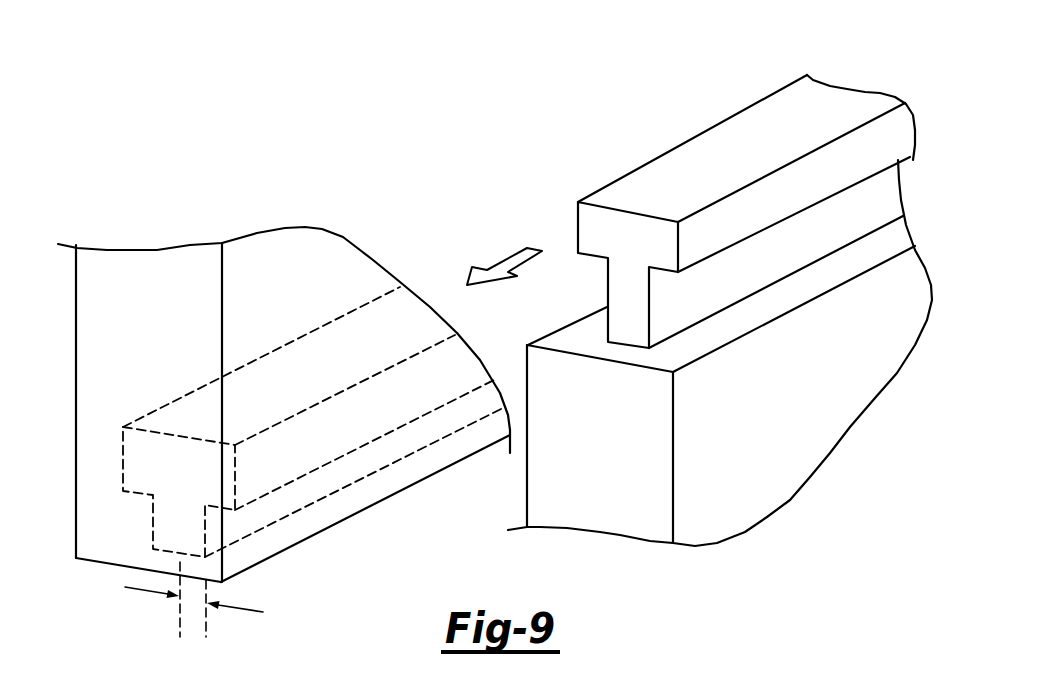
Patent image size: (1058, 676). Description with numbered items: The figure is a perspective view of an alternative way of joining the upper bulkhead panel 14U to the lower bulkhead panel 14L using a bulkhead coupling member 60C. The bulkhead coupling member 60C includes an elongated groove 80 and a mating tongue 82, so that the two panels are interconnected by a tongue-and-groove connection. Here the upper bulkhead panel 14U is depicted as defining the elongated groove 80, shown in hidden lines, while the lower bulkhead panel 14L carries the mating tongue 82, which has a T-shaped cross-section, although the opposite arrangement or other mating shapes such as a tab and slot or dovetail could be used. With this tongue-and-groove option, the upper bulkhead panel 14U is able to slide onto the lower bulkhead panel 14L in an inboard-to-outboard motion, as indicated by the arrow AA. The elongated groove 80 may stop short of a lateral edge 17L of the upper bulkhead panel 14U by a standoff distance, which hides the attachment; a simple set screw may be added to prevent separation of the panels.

The bulkhead coupling member 60C is at (507, 165).
The upper bulkhead panel 14U is at (285, 274).
The lower bulkhead panel 14L is at (787, 457).
The lateral edge 17L is at (129, 291).
The elongated groove 80 is at (133, 474).
The mating tongue 82 is at (827, 110).
The arrow AA is at (512, 259).